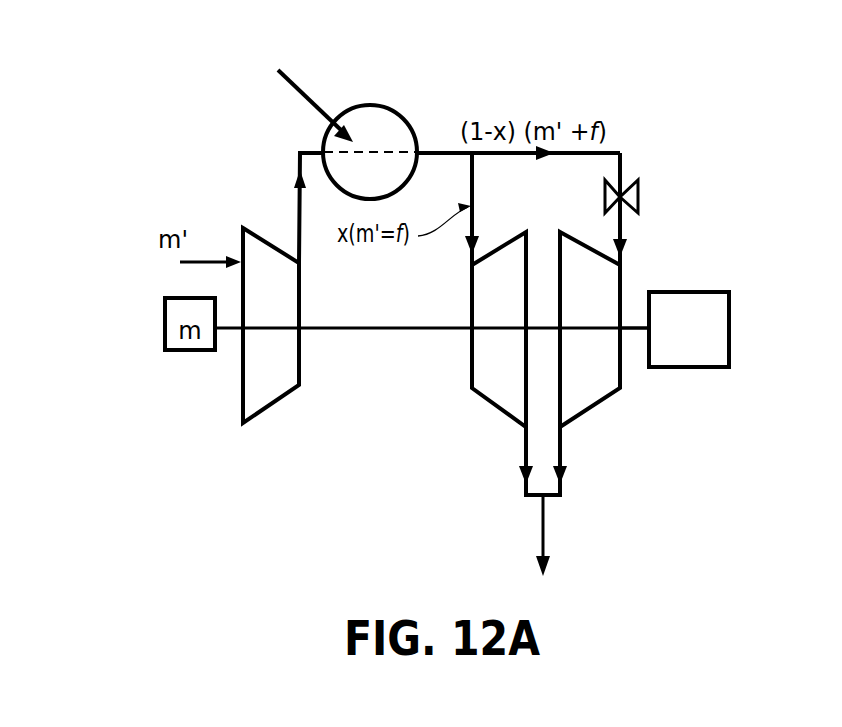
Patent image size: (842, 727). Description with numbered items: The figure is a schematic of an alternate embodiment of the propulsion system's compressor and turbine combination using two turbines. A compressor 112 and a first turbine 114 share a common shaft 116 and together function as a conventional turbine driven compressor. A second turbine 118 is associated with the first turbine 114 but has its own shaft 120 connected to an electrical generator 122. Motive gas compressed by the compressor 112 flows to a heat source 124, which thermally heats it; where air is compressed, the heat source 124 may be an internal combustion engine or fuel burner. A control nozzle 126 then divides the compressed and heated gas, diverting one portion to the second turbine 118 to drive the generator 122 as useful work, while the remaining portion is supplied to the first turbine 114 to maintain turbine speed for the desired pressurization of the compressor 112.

The compressor 112 is at (264, 410).
The first turbine 114 is at (470, 368).
The common shaft 116 is at (393, 328).
The second turbine 118 is at (585, 413).
The shaft 120 is at (632, 327).
The electrical generator 122 is at (685, 367).
The heat source 124 is at (400, 110).
The control nozzle 126 is at (638, 187).